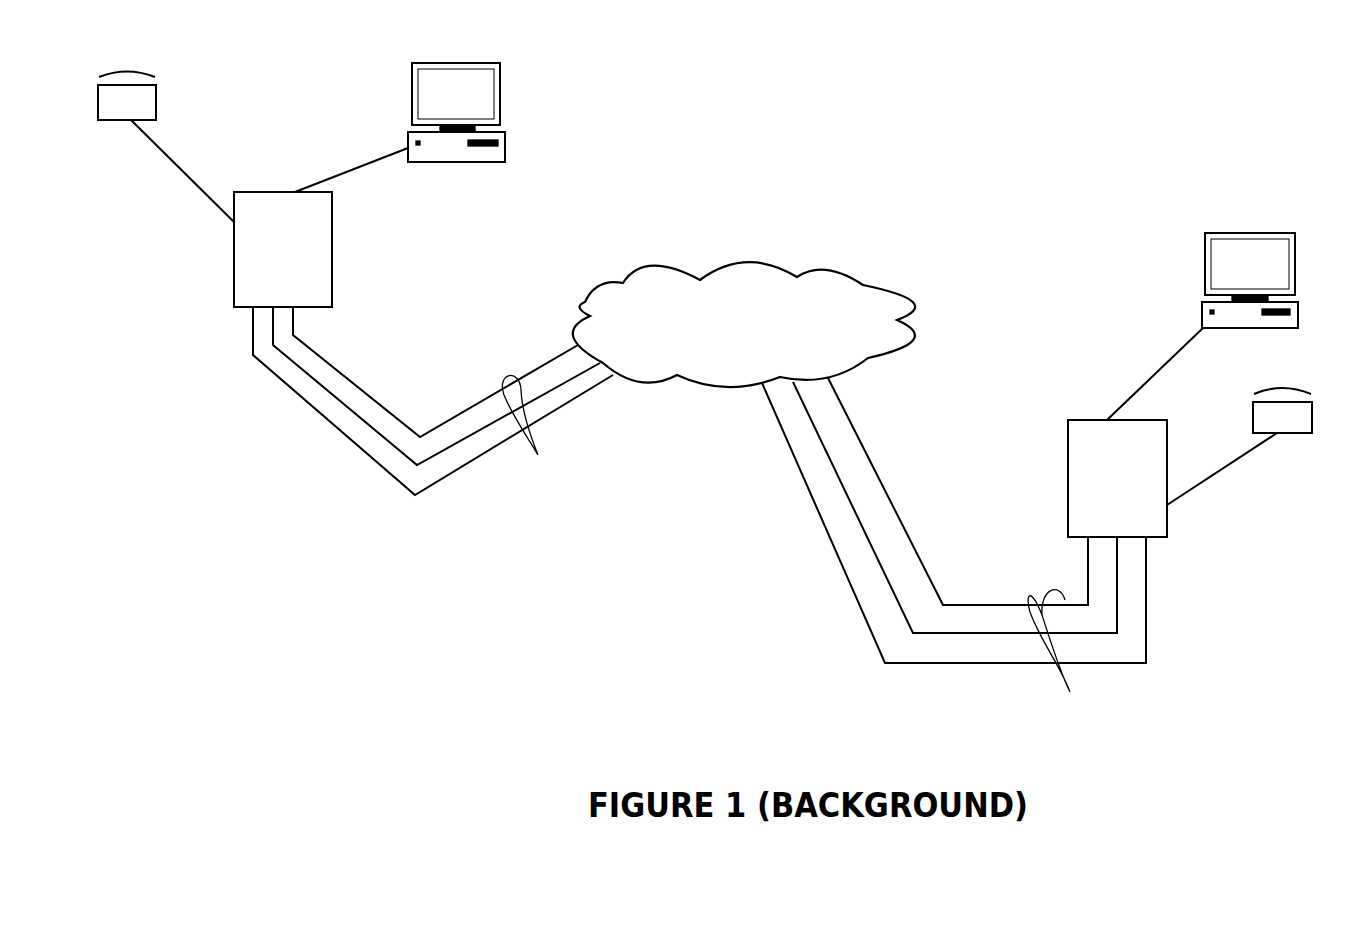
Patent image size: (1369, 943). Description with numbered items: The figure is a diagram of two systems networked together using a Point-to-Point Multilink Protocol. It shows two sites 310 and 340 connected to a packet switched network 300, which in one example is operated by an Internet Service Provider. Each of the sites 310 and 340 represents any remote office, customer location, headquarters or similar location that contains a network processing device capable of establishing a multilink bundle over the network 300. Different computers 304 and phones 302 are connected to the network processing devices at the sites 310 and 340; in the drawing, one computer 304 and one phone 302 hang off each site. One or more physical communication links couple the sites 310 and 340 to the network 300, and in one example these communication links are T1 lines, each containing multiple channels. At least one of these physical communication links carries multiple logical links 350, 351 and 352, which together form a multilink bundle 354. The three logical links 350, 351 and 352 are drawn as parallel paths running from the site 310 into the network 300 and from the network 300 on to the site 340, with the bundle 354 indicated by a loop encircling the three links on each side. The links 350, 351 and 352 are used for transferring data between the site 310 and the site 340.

The packet switched network 300 is at (662, 266).
The phones 302 is at (156, 100).
The computers 304 is at (500, 102).
The site 310 is at (283, 249).
The site 340 is at (1117, 478).
The logical link 350 is at (278, 379).
The logical link 351 is at (328, 395).
The logical link 352 is at (388, 417).
The multilink bundle 354 is at (806, 546).